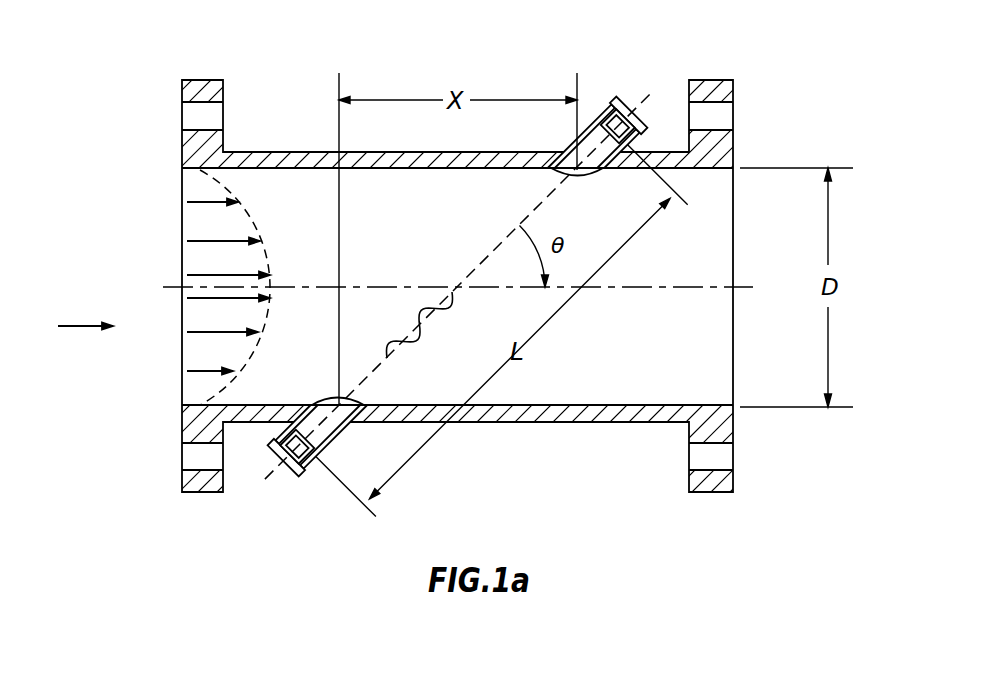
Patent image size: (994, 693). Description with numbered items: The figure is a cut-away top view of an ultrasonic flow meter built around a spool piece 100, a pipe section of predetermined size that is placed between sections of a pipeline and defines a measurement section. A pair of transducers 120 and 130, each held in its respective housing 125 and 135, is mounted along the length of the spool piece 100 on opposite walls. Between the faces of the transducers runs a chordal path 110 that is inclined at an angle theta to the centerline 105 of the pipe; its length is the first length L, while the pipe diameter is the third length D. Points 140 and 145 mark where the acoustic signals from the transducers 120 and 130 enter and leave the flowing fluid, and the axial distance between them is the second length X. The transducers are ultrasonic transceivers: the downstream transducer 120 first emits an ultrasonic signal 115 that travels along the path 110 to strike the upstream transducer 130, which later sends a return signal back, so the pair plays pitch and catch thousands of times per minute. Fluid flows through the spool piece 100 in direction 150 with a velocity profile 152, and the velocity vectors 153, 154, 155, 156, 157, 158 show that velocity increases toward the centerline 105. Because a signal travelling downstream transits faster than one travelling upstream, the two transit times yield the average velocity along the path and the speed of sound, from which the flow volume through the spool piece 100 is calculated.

The spool piece 100 is at (200, 80).
The centerline 105 is at (735, 289).
The path 110 is at (495, 247).
The ultrasonic signal 115 is at (432, 326).
The downstream transducer 120 is at (630, 103).
The transducer housing 125 is at (608, 110).
The upstream transducer 130 is at (284, 469).
The transducer housing 135 is at (322, 451).
The point 140 is at (578, 173).
The point 145 is at (338, 404).
The flow direction 150 is at (90, 329).
The velocity profile 152 is at (247, 207).
The velocity vector 153 is at (190, 201).
The velocity vector 154 is at (190, 240).
The velocity vector 155 is at (190, 274).
The velocity vector 156 is at (190, 299).
The velocity vector 157 is at (191, 333).
The velocity vector 158 is at (191, 372).